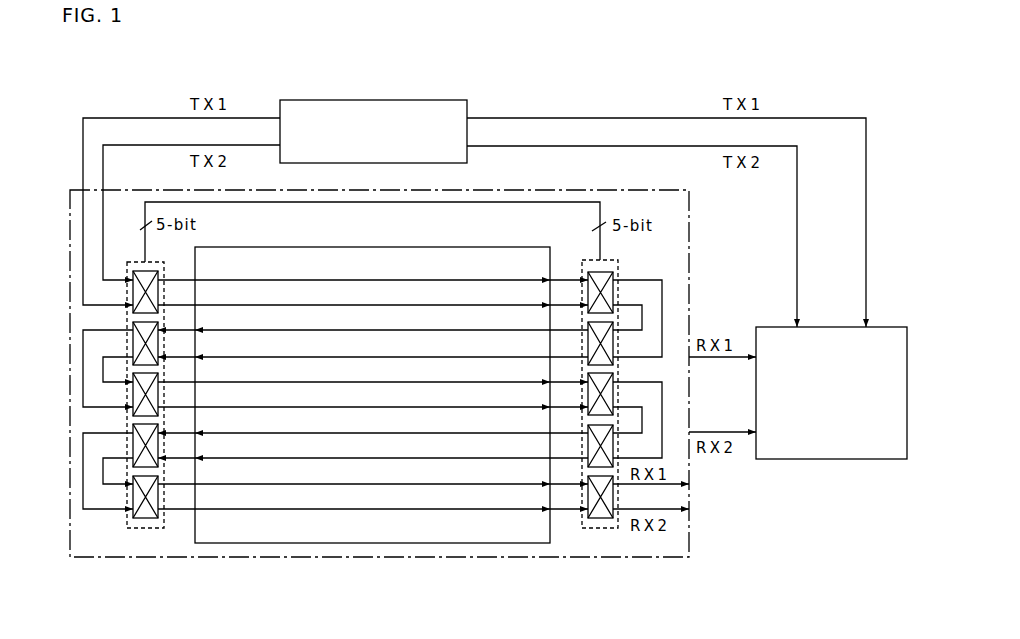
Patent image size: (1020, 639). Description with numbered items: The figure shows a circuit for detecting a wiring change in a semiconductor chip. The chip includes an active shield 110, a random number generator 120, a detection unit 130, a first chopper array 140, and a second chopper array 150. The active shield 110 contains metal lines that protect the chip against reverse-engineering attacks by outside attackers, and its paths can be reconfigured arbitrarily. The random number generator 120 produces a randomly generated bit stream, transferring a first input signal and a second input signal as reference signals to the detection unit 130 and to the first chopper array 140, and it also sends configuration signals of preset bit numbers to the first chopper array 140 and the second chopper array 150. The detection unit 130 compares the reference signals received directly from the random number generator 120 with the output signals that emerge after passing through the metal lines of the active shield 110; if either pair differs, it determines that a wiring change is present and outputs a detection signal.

The active shield 110 is at (372, 247).
The random number generator 120 is at (373, 100).
The detection unit 130 is at (890, 327).
The first chopper array 140 is at (145, 528).
The second chopper array 150 is at (598, 528).